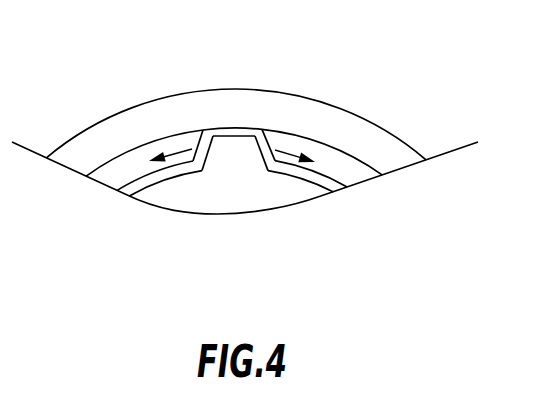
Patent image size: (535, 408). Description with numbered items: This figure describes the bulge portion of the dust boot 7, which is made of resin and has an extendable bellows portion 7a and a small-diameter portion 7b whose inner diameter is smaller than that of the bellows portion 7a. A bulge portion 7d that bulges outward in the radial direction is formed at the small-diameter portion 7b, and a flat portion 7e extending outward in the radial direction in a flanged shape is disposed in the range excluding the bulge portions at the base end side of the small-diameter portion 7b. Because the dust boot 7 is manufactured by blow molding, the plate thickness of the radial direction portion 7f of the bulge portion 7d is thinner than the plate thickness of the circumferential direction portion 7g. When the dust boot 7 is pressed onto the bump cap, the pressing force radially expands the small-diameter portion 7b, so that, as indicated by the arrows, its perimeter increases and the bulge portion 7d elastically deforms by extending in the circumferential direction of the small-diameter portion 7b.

The dust boot 7 is at (405, 143).
The bellows portion 7a is at (298, 110).
The small-diameter portion 7b is at (143, 182).
The bulge portion 7d is at (209, 138).
The flat portion 7e is at (340, 167).
The radial direction portion 7f is at (205, 147).
The circumferential direction portion 7g is at (243, 131).